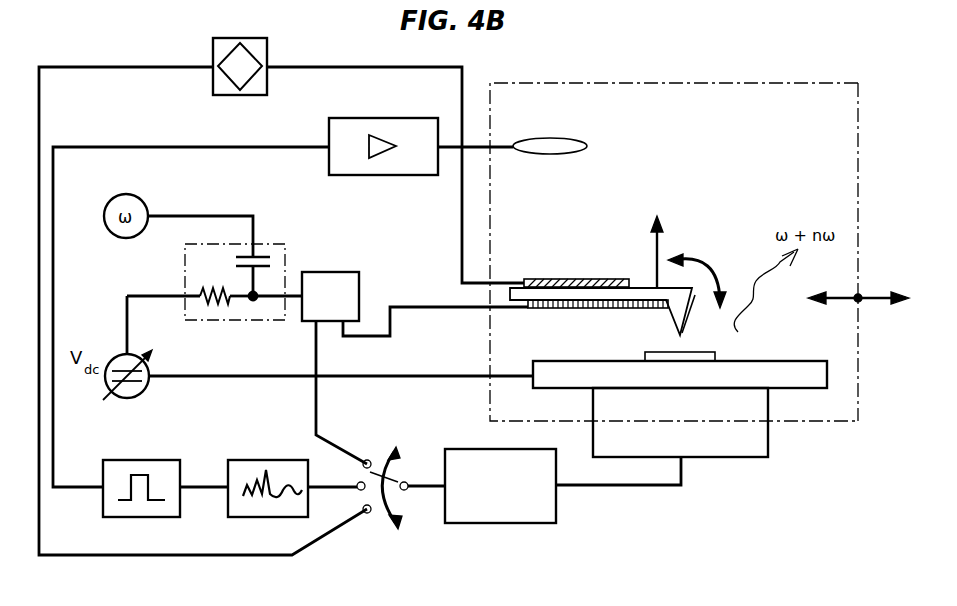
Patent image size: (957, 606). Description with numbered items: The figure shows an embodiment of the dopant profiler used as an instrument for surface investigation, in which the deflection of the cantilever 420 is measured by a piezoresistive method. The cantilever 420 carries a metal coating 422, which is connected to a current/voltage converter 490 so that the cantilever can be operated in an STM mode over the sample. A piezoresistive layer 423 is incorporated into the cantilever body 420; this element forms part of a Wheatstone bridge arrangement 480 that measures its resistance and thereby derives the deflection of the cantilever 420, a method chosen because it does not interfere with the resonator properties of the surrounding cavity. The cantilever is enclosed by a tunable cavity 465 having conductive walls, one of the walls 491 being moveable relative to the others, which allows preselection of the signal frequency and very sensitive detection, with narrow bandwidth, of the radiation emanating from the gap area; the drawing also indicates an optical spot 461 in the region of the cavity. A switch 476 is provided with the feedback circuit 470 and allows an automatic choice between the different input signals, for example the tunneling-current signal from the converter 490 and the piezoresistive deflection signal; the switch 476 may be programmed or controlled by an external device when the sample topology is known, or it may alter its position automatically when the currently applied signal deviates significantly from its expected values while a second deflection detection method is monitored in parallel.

The cantilever 420 is at (547, 256).
The metal coating 422 is at (612, 309).
The piezoresistive layer 423 is at (567, 279).
The optical beam spot 461 is at (566, 138).
The tunable cavity 465 is at (791, 83).
The feedback circuit 470 is at (492, 523).
The switch 476 is at (397, 479).
The Wheatstone bridge arrangement 480 is at (226, 38).
The current/voltage converter 490 is at (329, 272).
The moveable wall 491 is at (859, 145).